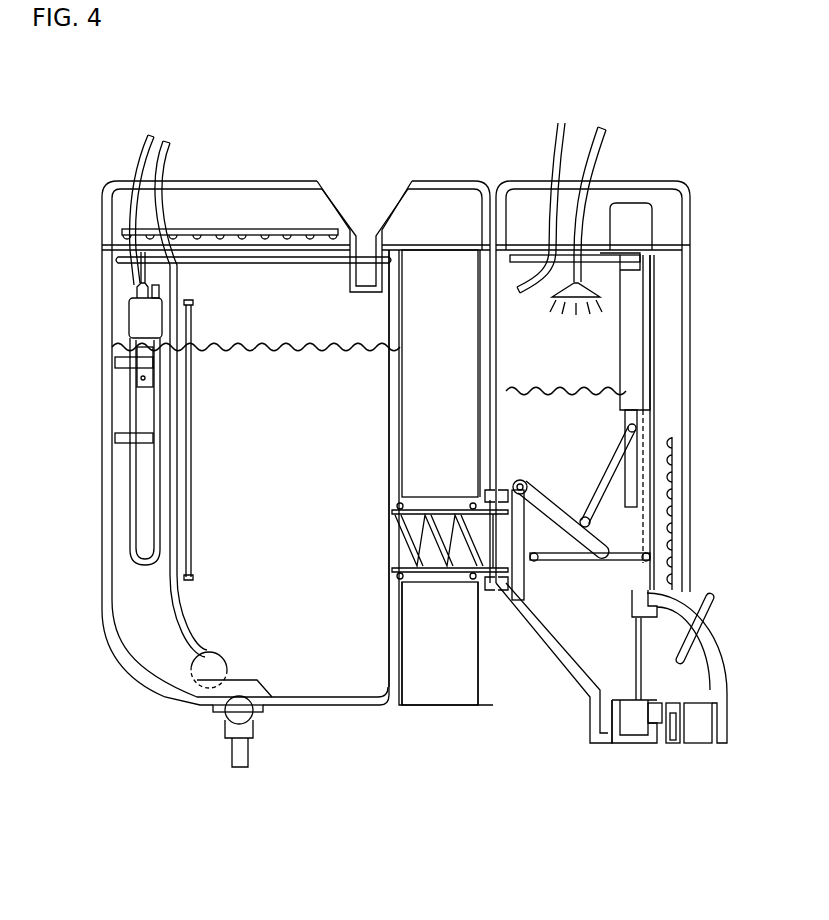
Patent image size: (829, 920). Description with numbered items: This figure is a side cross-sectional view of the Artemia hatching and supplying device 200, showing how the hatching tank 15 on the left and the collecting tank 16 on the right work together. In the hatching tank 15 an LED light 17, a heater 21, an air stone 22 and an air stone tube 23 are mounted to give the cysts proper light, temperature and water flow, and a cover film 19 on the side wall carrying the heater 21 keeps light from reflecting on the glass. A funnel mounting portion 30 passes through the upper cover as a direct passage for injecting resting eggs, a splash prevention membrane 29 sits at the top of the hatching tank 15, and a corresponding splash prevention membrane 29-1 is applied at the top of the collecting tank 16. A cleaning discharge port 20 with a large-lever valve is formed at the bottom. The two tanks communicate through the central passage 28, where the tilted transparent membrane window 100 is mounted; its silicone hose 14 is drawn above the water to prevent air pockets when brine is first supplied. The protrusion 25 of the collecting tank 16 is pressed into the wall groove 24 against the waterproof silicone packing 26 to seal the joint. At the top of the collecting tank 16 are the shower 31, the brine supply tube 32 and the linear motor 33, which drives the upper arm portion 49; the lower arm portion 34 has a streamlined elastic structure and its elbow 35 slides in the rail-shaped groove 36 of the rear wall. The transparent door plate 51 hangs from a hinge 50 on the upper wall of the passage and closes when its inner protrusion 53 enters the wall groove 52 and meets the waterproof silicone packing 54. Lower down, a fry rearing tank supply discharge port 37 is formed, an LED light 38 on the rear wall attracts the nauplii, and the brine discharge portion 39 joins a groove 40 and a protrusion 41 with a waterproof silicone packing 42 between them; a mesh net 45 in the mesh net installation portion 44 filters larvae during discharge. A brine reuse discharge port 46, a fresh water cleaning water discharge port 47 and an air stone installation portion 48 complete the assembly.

The Artemia hatching and supplying device 200 is at (440, 108).
The silicone hose 14 is at (390, 403).
The hatching tank 15 is at (242, 317).
The collecting tank 16 is at (600, 360).
The LED light 17 is at (273, 230).
The cover film 19 is at (193, 505).
The cleaning discharge port 20 is at (237, 703).
The heater 21 is at (140, 327).
The air stone 22 is at (202, 667).
The air stone tube 23 is at (185, 417).
The wall groove 24 is at (488, 493).
The protrusion 25 is at (483, 583).
The waterproof silicone packing 26 is at (438, 577).
The central passage 28 is at (405, 663).
The splash prevention membrane 29 is at (203, 262).
The splash prevention membrane 29-1 is at (525, 253).
The funnel mounting portion 30 is at (368, 225).
The shower 31 is at (572, 290).
The brine supply tube 32 is at (553, 238).
The linear motor 33 is at (633, 320).
The lower arm portion 34 is at (580, 577).
The elbow 35 is at (647, 558).
The rail-shaped groove 36 is at (637, 507).
The fry rearing tank supply discharge port 37 is at (607, 717).
The LED light 38 is at (670, 477).
The brine discharge portion 39 is at (687, 677).
The groove 40 is at (643, 590).
The protrusion 41 is at (670, 730).
The waterproof silicone packing 42 is at (653, 720).
The mesh net installation portion 44 is at (637, 693).
The mesh net 45 is at (630, 653).
The brine reuse discharge port 46 is at (672, 727).
The fresh water cleaning water discharge port 47 is at (710, 727).
The air stone installation portion 48 is at (703, 613).
The upper arm portion 49 is at (633, 530).
The hinge 50 is at (525, 480).
The door plate 51 is at (513, 577).
The wall groove 52 is at (508, 495).
The inner protrusion 53 is at (503, 590).
The waterproof silicone packing 54 is at (497, 585).
The tilted transparent membrane window 100 is at (420, 530).